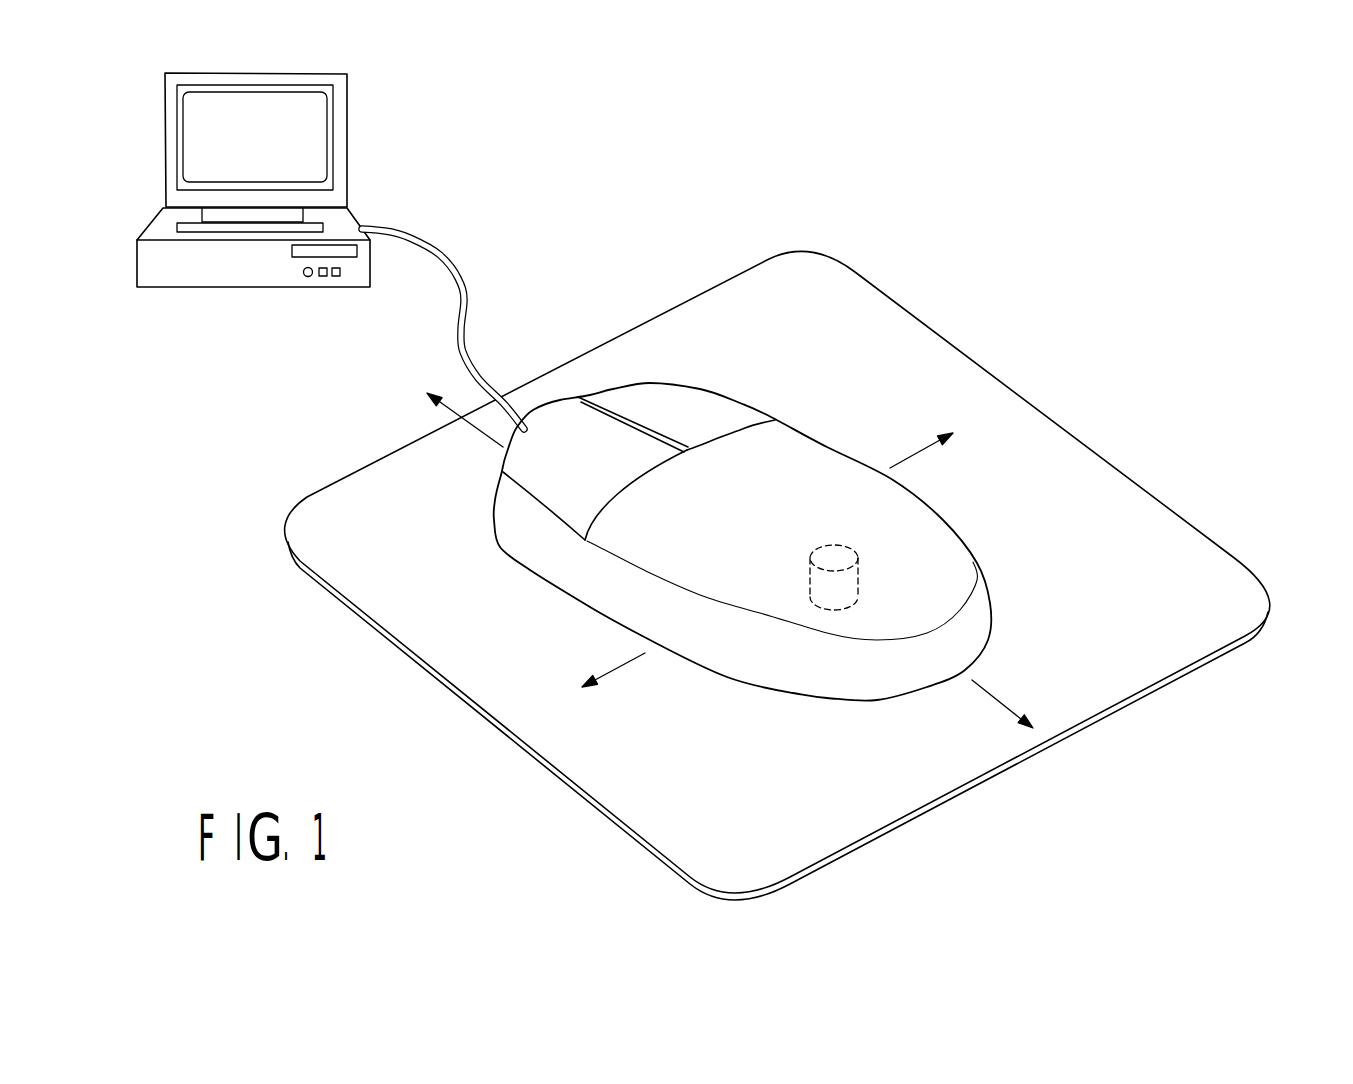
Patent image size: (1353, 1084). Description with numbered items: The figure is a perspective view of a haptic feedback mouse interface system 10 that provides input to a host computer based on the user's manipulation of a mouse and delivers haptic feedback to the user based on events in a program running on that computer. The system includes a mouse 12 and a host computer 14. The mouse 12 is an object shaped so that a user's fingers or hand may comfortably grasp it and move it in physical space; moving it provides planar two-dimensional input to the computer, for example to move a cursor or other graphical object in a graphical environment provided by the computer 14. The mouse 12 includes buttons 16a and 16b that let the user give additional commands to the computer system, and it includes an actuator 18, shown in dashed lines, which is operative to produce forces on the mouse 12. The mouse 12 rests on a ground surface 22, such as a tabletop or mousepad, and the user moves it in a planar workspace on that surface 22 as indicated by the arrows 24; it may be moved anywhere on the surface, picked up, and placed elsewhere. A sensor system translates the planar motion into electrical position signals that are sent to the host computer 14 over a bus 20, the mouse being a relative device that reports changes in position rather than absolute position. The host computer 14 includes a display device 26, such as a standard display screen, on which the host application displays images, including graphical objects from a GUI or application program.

The haptic feedback mouse interface system 10 is at (920, 172).
The mouse 12 is at (743, 485).
The host computer 14 is at (278, 223).
The button 16a is at (562, 427).
The button 16b is at (657, 397).
The actuator 18 is at (853, 553).
The bus 20 is at (455, 260).
The ground surface 22 is at (1189, 612).
The arrows 24 is at (472, 430).
The display device 26 is at (307, 133).